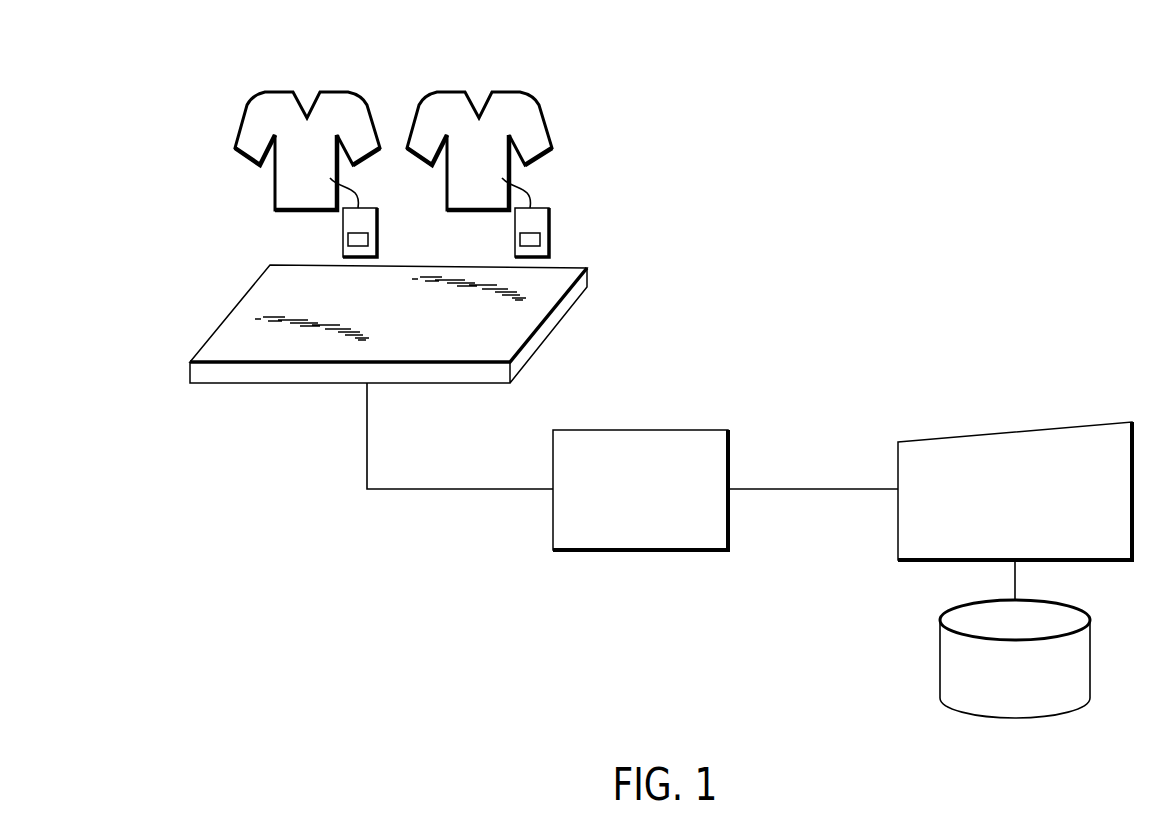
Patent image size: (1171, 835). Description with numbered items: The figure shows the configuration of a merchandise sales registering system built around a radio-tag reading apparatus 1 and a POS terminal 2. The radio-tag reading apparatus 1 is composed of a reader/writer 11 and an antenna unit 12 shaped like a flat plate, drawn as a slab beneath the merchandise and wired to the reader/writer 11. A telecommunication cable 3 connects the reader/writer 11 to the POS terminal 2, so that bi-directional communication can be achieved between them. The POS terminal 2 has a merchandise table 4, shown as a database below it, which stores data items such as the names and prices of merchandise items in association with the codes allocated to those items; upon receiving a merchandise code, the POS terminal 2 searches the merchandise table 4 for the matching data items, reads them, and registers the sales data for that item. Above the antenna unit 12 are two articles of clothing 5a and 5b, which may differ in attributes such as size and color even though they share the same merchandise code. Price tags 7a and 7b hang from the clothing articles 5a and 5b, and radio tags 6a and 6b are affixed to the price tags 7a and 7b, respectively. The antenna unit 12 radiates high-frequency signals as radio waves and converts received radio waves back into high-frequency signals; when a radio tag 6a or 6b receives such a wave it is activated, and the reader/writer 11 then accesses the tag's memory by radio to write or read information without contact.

The radio-tag reading apparatus 1 is at (626, 371).
The POS terminal 2 is at (1018, 431).
The telecommunication cable 3 is at (810, 488).
The merchandise table 4 is at (1090, 665).
The article of clothing 5a is at (288, 90).
The article of clothing 5b is at (460, 90).
The radio tag 6a is at (368, 242).
The radio tag 6b is at (540, 242).
The price tag 7a is at (378, 216).
The price tag 7b is at (550, 216).
The reader/writer 11 is at (642, 550).
The antenna unit 12 is at (247, 383).